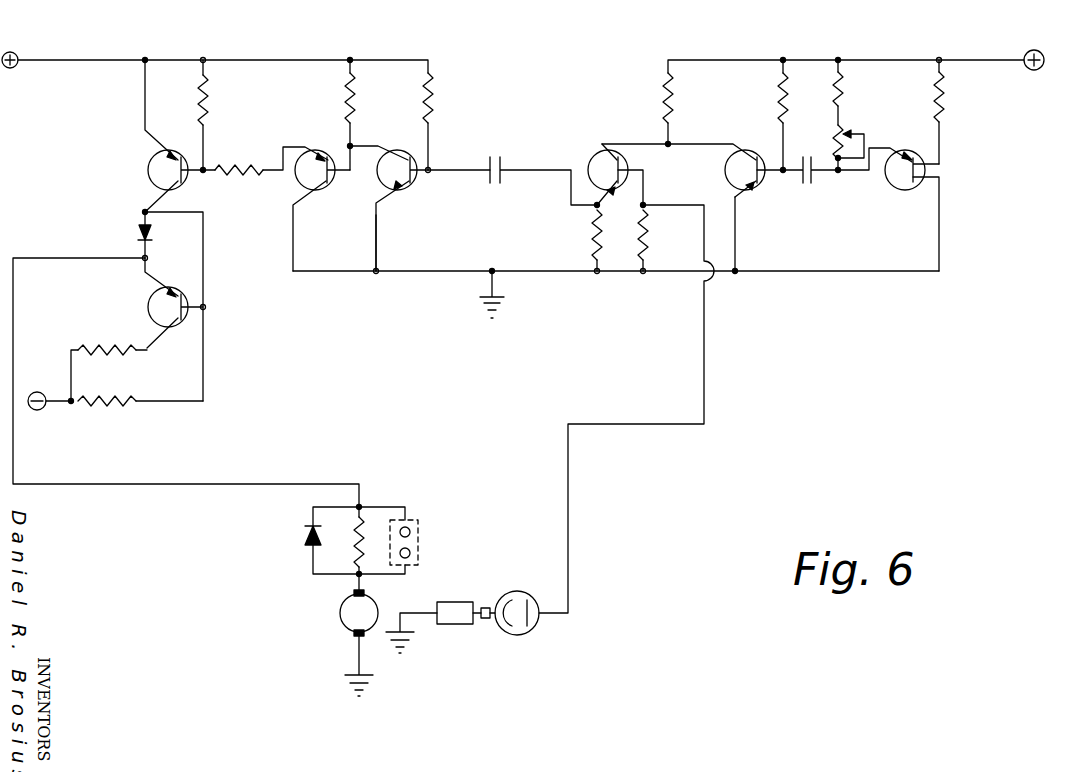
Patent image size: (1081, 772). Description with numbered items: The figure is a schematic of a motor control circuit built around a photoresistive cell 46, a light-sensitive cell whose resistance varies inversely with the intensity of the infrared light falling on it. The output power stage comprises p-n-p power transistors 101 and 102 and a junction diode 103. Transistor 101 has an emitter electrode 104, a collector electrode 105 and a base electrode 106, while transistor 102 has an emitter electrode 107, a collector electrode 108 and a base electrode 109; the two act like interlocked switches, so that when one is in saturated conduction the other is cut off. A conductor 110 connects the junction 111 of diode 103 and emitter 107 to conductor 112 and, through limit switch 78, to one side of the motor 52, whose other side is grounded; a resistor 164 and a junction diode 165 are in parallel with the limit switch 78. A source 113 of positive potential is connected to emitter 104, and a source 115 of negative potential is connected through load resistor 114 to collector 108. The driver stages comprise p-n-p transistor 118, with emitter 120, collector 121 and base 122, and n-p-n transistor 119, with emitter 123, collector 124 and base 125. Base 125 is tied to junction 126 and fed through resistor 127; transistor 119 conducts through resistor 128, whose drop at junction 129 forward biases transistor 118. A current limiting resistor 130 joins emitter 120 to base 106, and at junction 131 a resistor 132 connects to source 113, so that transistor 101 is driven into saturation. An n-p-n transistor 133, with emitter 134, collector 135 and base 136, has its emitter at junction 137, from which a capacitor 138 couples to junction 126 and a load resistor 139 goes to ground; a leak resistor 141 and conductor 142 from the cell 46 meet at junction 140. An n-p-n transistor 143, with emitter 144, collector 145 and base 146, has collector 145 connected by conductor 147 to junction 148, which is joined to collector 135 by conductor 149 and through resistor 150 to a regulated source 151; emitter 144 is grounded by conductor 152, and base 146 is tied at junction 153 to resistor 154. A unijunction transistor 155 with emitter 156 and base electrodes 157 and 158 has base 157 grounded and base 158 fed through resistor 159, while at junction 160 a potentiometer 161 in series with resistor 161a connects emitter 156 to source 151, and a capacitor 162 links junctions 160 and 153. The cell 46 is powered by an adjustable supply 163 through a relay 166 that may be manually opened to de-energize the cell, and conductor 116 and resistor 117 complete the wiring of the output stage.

The source of positive D-C potential 113 is at (18, 54).
The source of regulated positive D-C potential 151 is at (1038, 70).
The source of negative D-C potential 115 is at (37, 410).
The power transistor 101 is at (147, 170).
The emitter electrode 104 is at (166, 154).
The collector electrode 105 is at (160, 188).
The base electrode 106 is at (188, 184).
The resistor 132 is at (207, 88).
The junction 131 is at (206, 166).
The current limiting resistor 130 is at (236, 178).
The p-n-p transistor 118 is at (282, 209).
The emitter electrode 120 is at (338, 142).
The base electrode 122 is at (334, 182).
The collector electrode 121 is at (315, 195).
The resistor 128 is at (358, 88).
The junction 129 is at (353, 142).
The collector electrode 124 is at (390, 156).
The base electrode 125 is at (420, 185).
The emitter electrode 123 is at (402, 198).
The n-p-n transistor 119 is at (384, 205).
The resistor 127 is at (436, 88).
The junction 126 is at (434, 166).
The capacitor 138 is at (506, 160).
The emitter electrode 134 is at (590, 172).
The n-p-n transistor 133 is at (602, 146).
The conductor 149 is at (630, 142).
The collector electrode 135 is at (622, 160).
The base electrode 136 is at (640, 172).
The junction 137 is at (592, 210).
The load resistor 139 is at (592, 240).
The junction 140 is at (650, 203).
The leak resistor 141 is at (650, 236).
The conductor 142 is at (708, 376).
The resistor 150 is at (678, 98).
The junction 148 is at (674, 142).
The n-p-n transistor 143 is at (724, 176).
The conductor 147 is at (728, 142).
The collector electrode 145 is at (740, 158).
The base electrode 146 is at (760, 186).
The emitter electrode 144 is at (748, 196).
The conductor 152 is at (740, 238).
The resistor 154 is at (778, 90).
The junction 153 is at (792, 164).
The junction 160 is at (842, 174).
The capacitor 162 is at (812, 190).
The resistor 161a is at (846, 79).
The potentiometer 161 is at (846, 130).
The unijunction transistor 155 is at (908, 200).
The emitter electrode 156 is at (920, 148).
The second base electrode 158 is at (930, 162).
The first base electrode 157 is at (930, 184).
The resistor 159 is at (948, 96).
The junction diode 103 is at (136, 236).
The lead 116 is at (208, 266).
The junction 111 is at (150, 256).
The conductor 110 is at (58, 256).
The power transistor 102 is at (148, 308).
The emitter electrode 107 is at (158, 290).
The collector electrode 108 is at (158, 322).
The base electrode 109 is at (186, 328).
The load resistor 114 is at (126, 354).
The resistor 117 is at (126, 410).
The conductor 112 is at (390, 507).
The junction diode 165 is at (300, 536).
The resistor 164 is at (352, 542).
The limit switch 78 is at (420, 526).
The motor 52 is at (340, 614).
The adjustable voltage supply 163 is at (456, 600).
The relay 166 is at (486, 622).
The photoresistive cell 46 is at (526, 634).